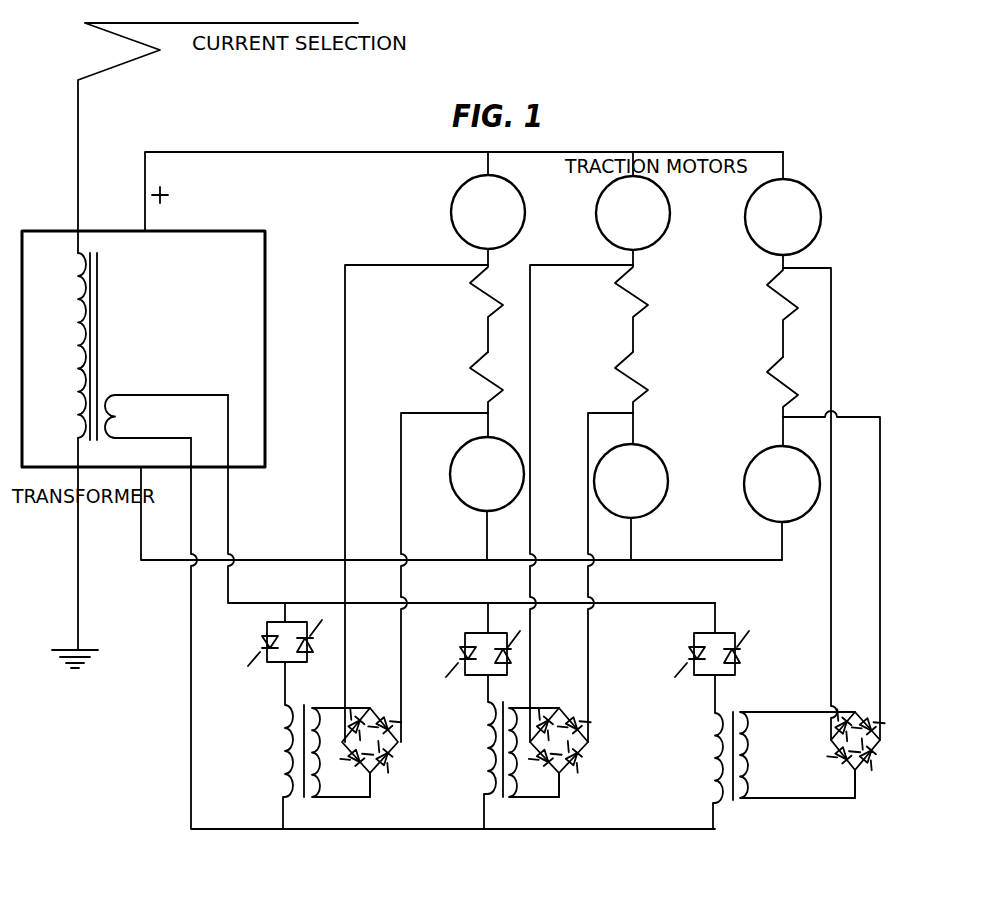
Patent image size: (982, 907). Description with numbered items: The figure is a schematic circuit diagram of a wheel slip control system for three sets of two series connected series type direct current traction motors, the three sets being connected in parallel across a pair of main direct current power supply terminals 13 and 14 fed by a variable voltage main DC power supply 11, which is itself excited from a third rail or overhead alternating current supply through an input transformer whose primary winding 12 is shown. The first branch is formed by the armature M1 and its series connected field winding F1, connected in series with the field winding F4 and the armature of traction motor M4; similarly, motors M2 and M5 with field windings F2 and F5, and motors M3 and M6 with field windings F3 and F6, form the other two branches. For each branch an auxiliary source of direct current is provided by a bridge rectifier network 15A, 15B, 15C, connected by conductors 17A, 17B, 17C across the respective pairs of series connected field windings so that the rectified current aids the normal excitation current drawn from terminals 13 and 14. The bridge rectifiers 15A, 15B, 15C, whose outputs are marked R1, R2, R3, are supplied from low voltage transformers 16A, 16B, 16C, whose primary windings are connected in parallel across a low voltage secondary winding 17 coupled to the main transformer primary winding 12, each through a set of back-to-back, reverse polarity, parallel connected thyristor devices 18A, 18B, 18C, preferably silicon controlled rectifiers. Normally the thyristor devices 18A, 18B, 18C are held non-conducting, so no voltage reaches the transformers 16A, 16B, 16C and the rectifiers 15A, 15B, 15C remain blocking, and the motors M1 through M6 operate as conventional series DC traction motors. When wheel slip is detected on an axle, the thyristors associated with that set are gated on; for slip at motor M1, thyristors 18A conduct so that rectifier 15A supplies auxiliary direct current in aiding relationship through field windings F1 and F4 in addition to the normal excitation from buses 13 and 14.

The main power supply 11 is at (210, 231).
The primary winding 12 is at (78, 325).
The main direct current power supply terminal 13 is at (289, 152).
The main direct current power supply terminal 14 is at (267, 560).
The bridge rectifier network 15A is at (398, 745).
The bridge rectifier network 15B is at (588, 745).
The bridge rectifier network 15C is at (845, 718).
The low voltage transformer 16A is at (347, 410).
The low voltage transformer 16B is at (534, 402).
The low voltage transformer 16C is at (834, 353).
The low voltage secondary winding 17 is at (113, 418).
The conductor 17A is at (403, 464).
The conductor 17B is at (588, 524).
The conductor 17C is at (882, 477).
The thyristor devices 18A is at (287, 650).
The thyristor devices 18B is at (465, 640).
The thyristor devices 18C is at (736, 664).
The traction motor armature M1 is at (488, 200).
The traction motor M2 is at (633, 201).
The traction motor M3 is at (783, 203).
The traction motor armature M4 is at (487, 498).
The traction motor M5 is at (631, 502).
The traction motor M6 is at (782, 503).
The field winding F1 is at (495, 300).
The field winding F2 is at (640, 301).
The field winding F3 is at (791, 306).
The field winding F4 is at (495, 394).
The field winding F5 is at (640, 398).
The field winding F6 is at (791, 401).
The rectifier output R1 is at (383, 791).
The rectifier output R2 is at (572, 790).
The rectifier output R3 is at (836, 784).